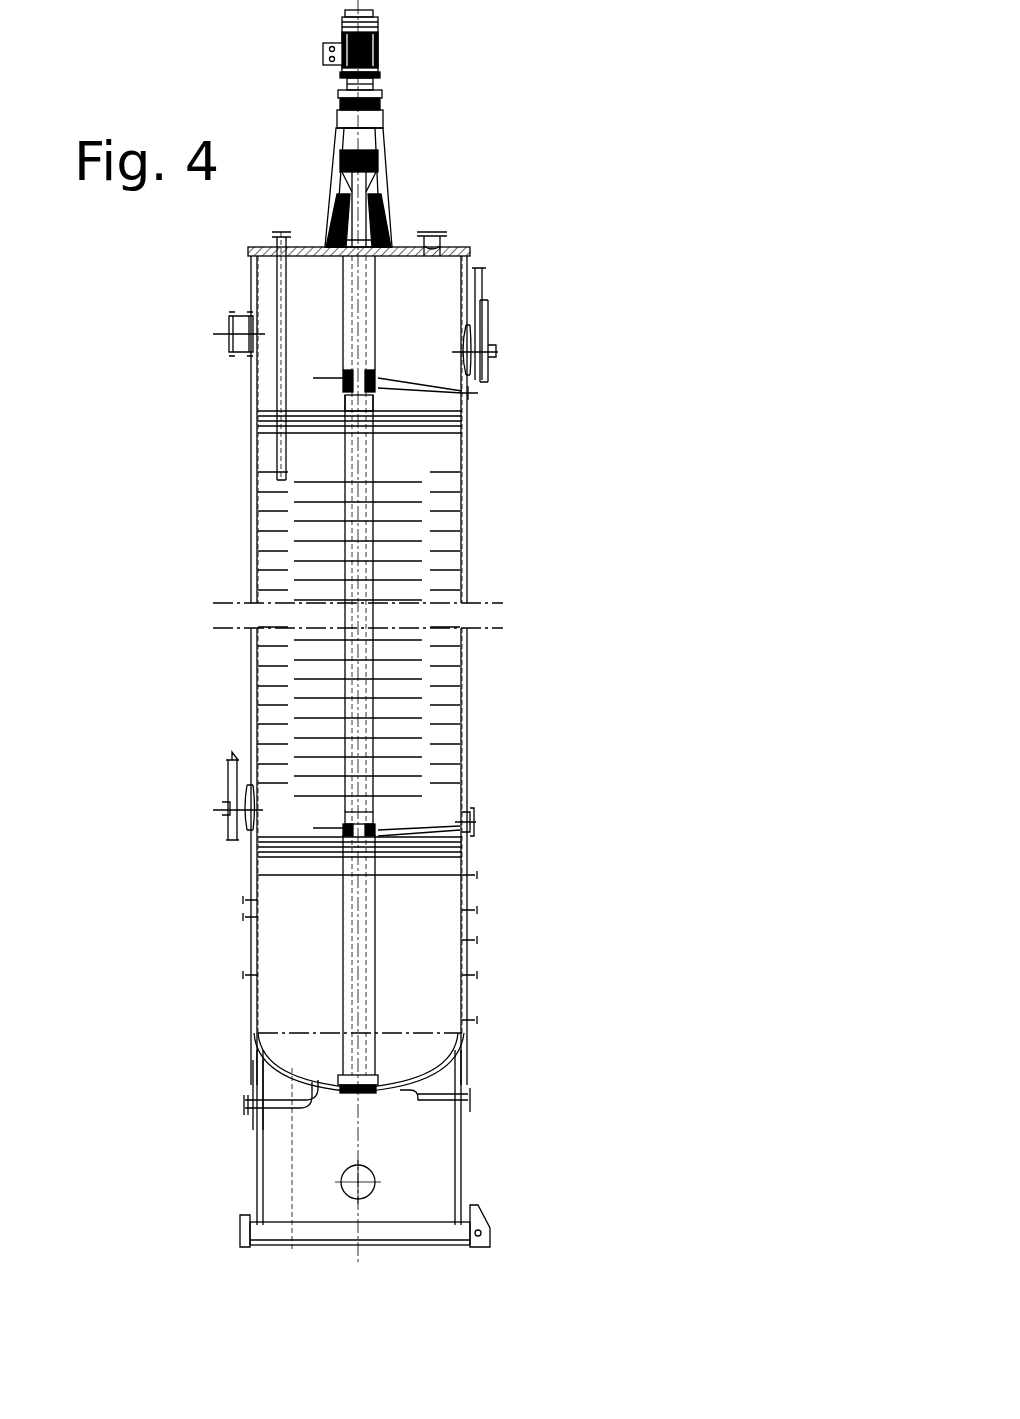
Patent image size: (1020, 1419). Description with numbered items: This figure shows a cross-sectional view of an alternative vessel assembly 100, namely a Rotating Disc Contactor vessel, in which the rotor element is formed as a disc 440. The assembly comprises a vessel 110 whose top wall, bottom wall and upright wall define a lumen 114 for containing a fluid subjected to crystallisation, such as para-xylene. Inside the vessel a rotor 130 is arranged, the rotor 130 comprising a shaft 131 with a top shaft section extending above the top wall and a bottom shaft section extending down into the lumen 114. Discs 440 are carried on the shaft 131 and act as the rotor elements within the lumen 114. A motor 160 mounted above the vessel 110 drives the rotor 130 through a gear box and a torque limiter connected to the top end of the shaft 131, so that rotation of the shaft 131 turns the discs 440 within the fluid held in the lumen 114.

The vessel assembly 100 is at (288, 158).
The motor 160 is at (376, 28).
The crystallizing vessel 110 is at (236, 570).
The lumen 114 is at (395, 461).
The shaft 131 is at (372, 668).
The disc 440 is at (395, 680).
The rotor 130 is at (320, 800).